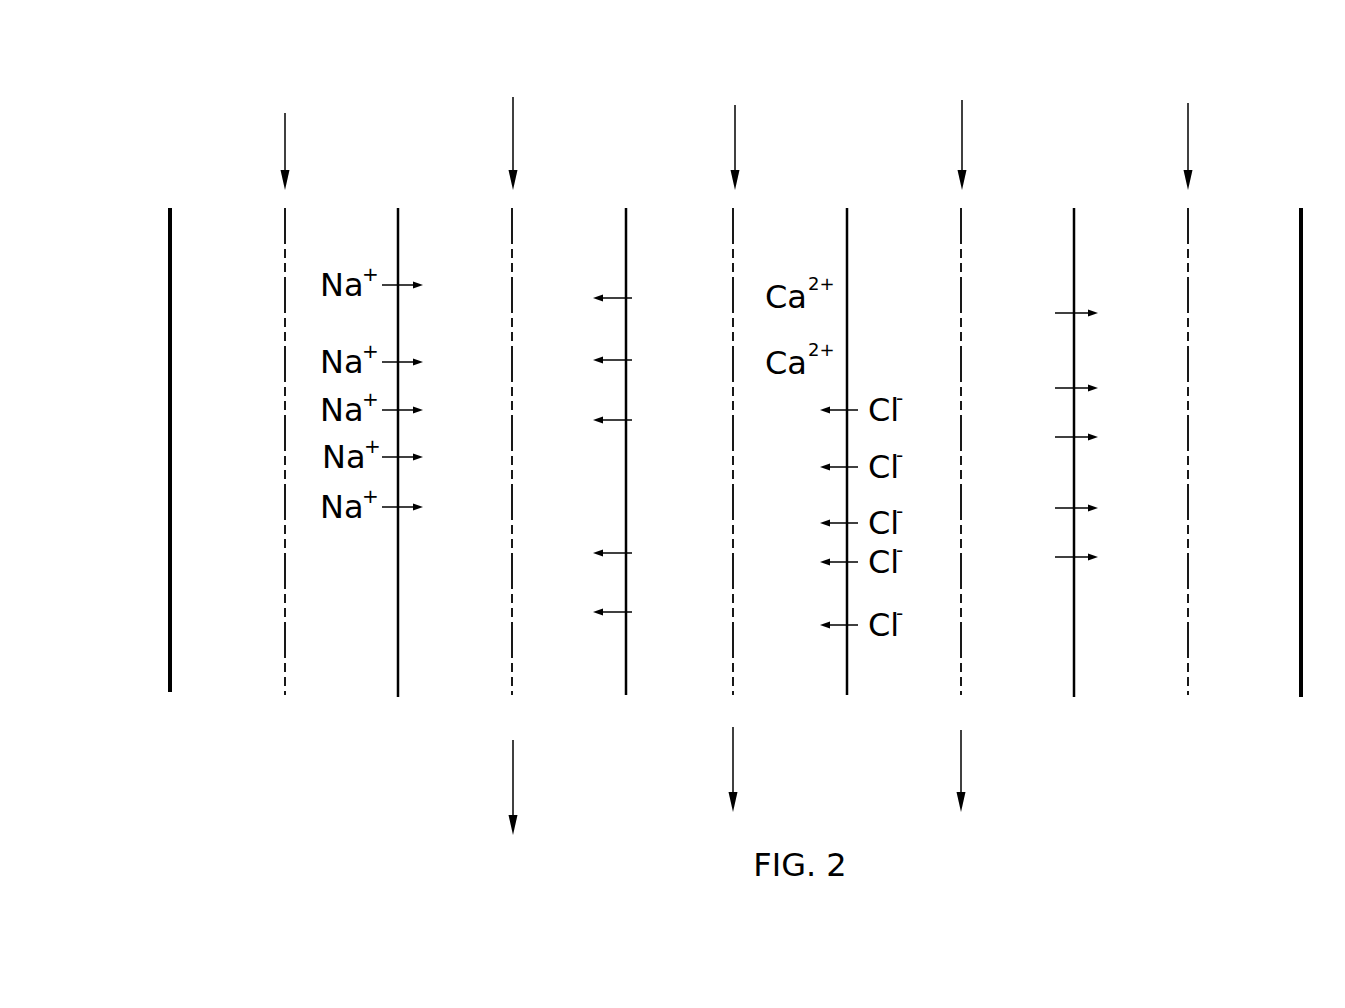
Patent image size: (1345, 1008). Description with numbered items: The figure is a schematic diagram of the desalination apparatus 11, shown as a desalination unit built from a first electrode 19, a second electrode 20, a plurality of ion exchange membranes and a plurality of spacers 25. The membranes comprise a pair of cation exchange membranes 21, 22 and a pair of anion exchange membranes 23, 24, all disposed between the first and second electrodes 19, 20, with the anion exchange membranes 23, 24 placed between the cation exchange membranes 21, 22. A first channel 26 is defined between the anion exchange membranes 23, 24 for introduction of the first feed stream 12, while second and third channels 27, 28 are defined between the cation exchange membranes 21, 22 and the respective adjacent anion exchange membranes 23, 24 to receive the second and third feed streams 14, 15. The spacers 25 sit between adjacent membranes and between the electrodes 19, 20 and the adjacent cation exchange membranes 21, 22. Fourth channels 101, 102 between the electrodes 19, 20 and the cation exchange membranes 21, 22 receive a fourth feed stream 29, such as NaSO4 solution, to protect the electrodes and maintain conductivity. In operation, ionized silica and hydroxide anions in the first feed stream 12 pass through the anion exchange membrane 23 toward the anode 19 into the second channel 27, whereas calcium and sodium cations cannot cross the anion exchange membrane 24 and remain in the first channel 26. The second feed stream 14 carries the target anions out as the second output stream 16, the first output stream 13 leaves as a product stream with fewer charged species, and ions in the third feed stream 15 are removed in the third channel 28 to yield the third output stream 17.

The desalination apparatus 11 is at (250, 64).
The fourth channel 101 is at (228, 187).
The fourth channel 102 is at (1236, 225).
The first electrode 19 is at (170, 692).
The second electrode 20 is at (1301, 657).
The cation exchange membrane 21 is at (398, 673).
The cation exchange membrane 22 is at (1074, 668).
The anion exchange membrane 23 is at (626, 675).
The anion exchange membrane 24 is at (847, 673).
The spacer 25 is at (285, 673).
The first channel 26 is at (670, 238).
The second channel 27 is at (440, 250).
The third channel 28 is at (1022, 235).
The fourth feed stream 29 is at (285, 140).
The first feed stream 12 is at (735, 140).
The first output stream 13 is at (733, 745).
The second feed stream 14 is at (513, 137).
The third feed stream 15 is at (962, 140).
The second output stream 16 is at (513, 760).
The third output stream 17 is at (961, 763).